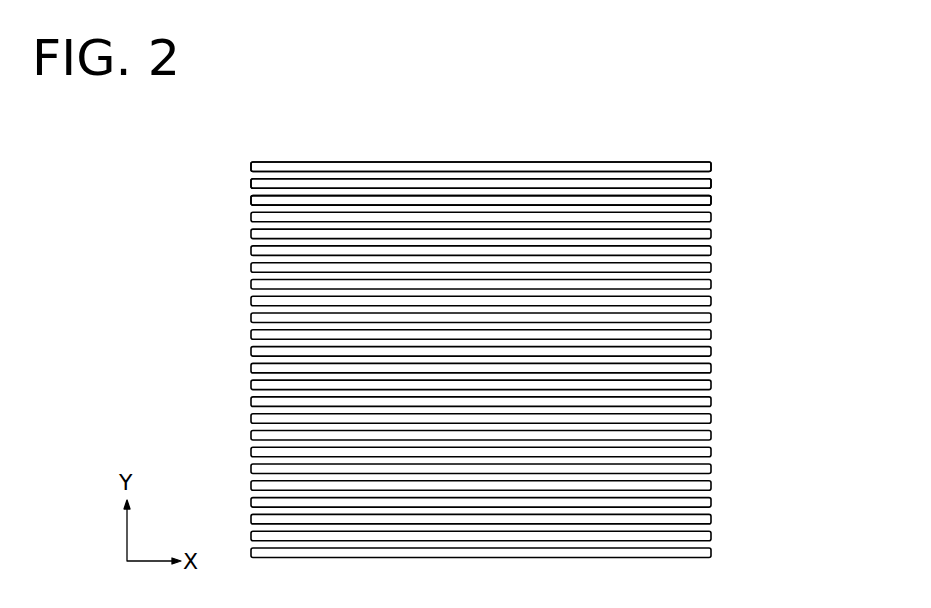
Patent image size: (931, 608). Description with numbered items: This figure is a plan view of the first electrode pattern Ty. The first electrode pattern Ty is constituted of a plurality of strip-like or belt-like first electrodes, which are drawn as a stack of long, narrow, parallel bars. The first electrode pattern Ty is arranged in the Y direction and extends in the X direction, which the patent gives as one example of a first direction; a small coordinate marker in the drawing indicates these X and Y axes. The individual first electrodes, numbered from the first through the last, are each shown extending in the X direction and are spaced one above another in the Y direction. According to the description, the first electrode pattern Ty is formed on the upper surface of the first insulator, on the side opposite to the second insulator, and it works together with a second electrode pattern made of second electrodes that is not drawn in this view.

The first electrode pattern Ty is at (768, 323).